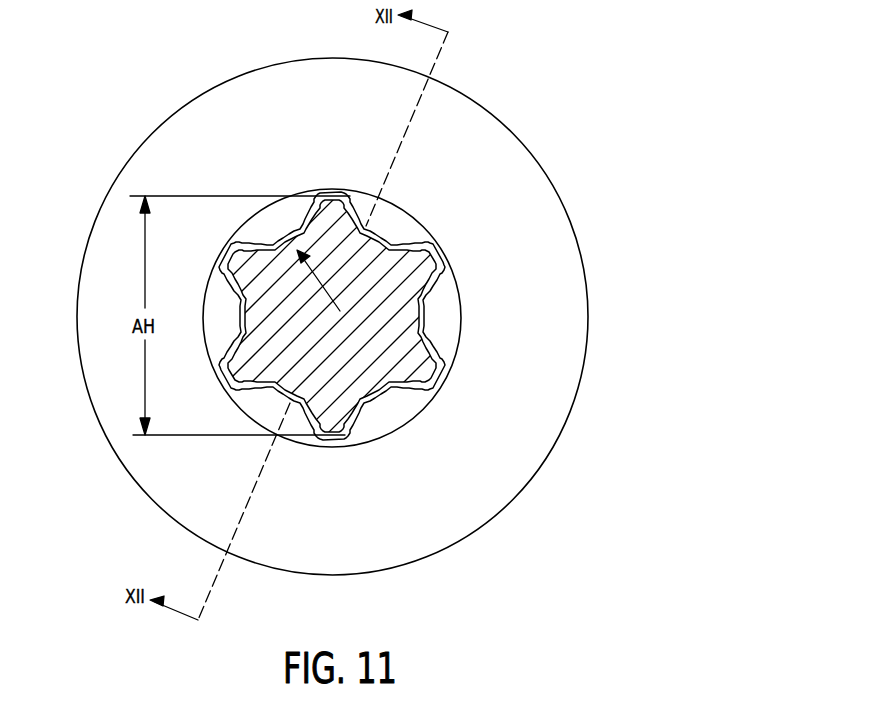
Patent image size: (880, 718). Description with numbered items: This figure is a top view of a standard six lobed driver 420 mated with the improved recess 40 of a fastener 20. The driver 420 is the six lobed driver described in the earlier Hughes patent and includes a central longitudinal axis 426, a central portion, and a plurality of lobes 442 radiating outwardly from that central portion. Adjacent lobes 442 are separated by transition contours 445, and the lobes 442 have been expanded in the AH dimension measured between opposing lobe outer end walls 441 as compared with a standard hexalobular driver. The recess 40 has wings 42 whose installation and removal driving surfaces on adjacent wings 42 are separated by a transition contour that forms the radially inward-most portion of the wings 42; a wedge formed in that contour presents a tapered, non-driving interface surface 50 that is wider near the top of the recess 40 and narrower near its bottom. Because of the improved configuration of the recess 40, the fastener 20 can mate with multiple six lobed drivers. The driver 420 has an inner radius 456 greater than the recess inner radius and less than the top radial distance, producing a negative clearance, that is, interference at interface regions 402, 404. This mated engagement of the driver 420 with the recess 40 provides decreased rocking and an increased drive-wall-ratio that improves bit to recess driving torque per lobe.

The fastener 20 is at (98, 220).
The recess 40 is at (432, 353).
The wings 42 is at (443, 375).
The interface surface 50 is at (410, 303).
The interface region 402 is at (362, 233).
The interface region 404 is at (400, 250).
The six lobed driver 420 is at (413, 268).
The central longitudinal axis 426 is at (340, 311).
The lobe outer end walls 441 is at (326, 191).
The lobes 442 is at (440, 383).
The transition contours 445 is at (413, 314).
The inner radius 456 is at (243, 353).